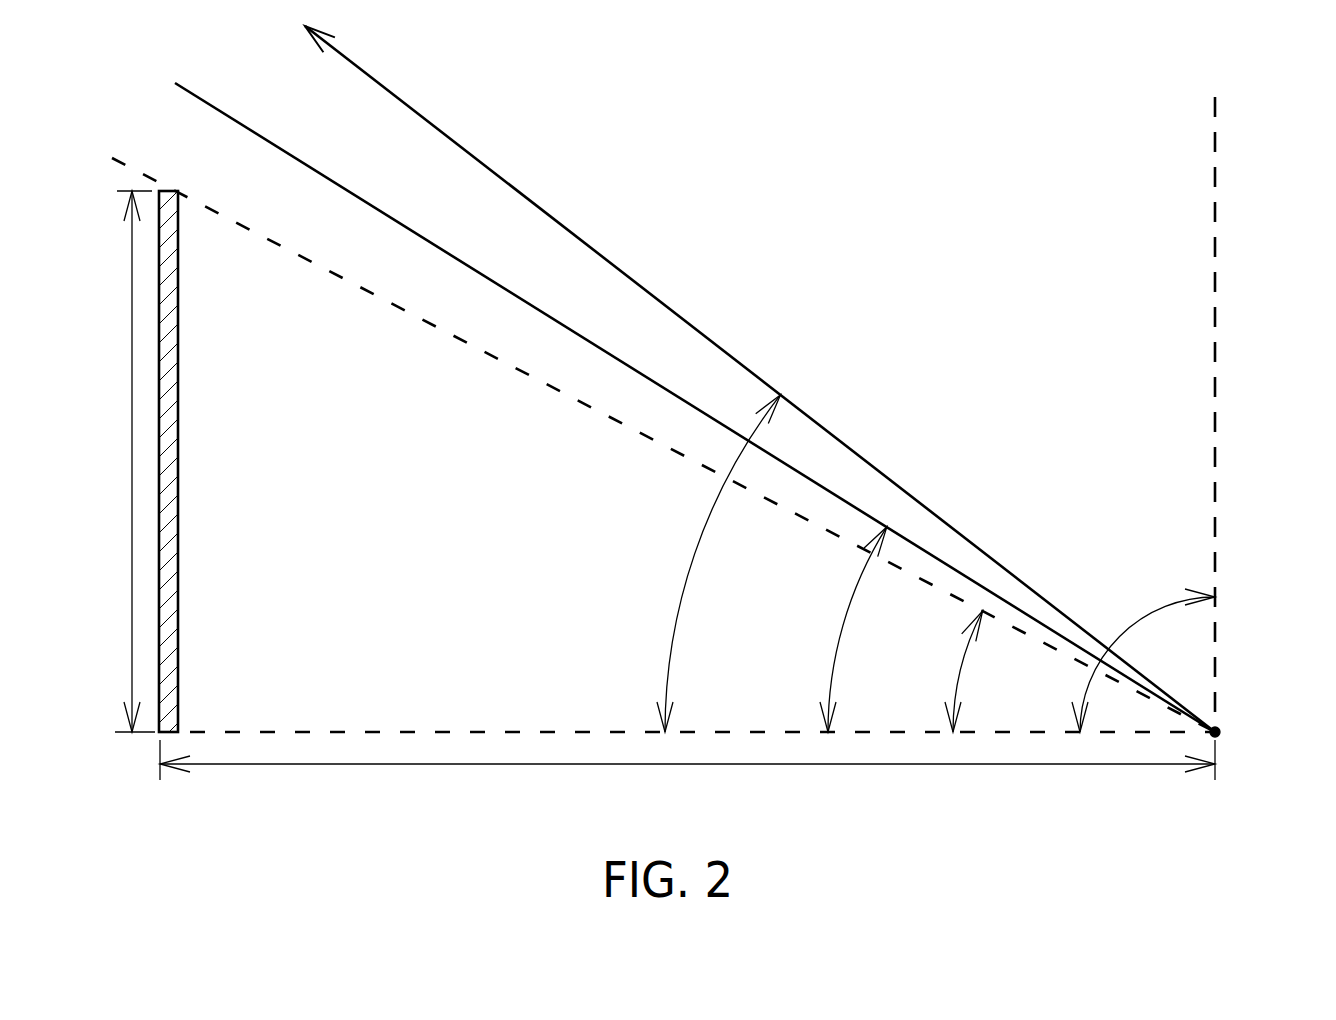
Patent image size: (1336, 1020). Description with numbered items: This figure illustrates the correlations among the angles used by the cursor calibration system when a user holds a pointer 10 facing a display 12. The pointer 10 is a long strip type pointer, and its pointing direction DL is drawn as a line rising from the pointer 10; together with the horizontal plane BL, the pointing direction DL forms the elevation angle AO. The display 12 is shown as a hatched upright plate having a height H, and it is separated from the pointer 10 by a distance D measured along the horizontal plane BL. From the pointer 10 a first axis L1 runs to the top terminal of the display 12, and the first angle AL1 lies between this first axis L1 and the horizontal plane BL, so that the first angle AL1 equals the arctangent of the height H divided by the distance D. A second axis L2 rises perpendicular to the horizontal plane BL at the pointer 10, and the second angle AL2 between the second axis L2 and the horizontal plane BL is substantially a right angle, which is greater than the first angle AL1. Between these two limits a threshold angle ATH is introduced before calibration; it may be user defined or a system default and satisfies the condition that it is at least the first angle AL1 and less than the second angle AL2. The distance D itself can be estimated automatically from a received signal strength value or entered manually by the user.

The pointer 10 is at (1222, 732).
The display 12 is at (180, 487).
The horizontal plane BL is at (487, 730).
The first axis L1 is at (410, 313).
The second axis L2 is at (1216, 290).
The pointing direction DL is at (630, 277).
The height H is at (126, 461).
The distance D is at (687, 771).
The elevation angle AO is at (713, 563).
The threshold angle ATH is at (695, 407).
The first angle AL1 is at (942, 671).
The second angle AL2 is at (1143, 658).